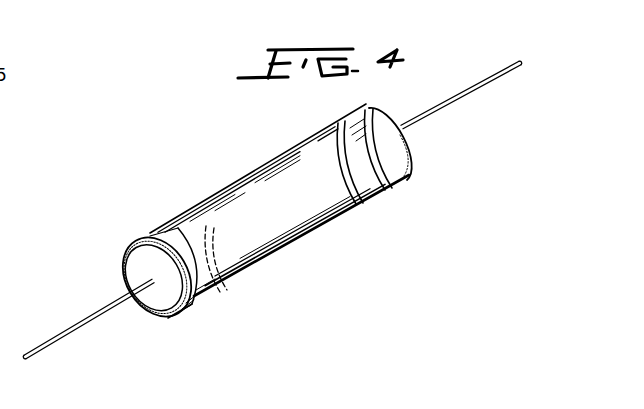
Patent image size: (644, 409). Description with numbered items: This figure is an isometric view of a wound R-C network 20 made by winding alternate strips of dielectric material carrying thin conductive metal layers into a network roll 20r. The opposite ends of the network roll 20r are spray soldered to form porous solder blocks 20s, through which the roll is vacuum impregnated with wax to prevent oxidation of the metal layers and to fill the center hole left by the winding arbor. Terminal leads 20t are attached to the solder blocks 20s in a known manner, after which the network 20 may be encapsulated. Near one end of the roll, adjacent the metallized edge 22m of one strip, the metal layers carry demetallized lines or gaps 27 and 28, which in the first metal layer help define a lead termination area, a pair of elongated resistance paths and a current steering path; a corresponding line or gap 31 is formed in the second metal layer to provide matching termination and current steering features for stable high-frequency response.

The R-C network 20 is at (342, 222).
The network roll 20r is at (290, 228).
The porous solder blocks 20s is at (150, 300).
The terminal leads 20t is at (93, 313).
The metallized edge 22m is at (197, 283).
The demetallized line or gap 27 is at (322, 153).
The demetallized line or gap 28 is at (359, 124).
The line or gap 31 is at (200, 215).